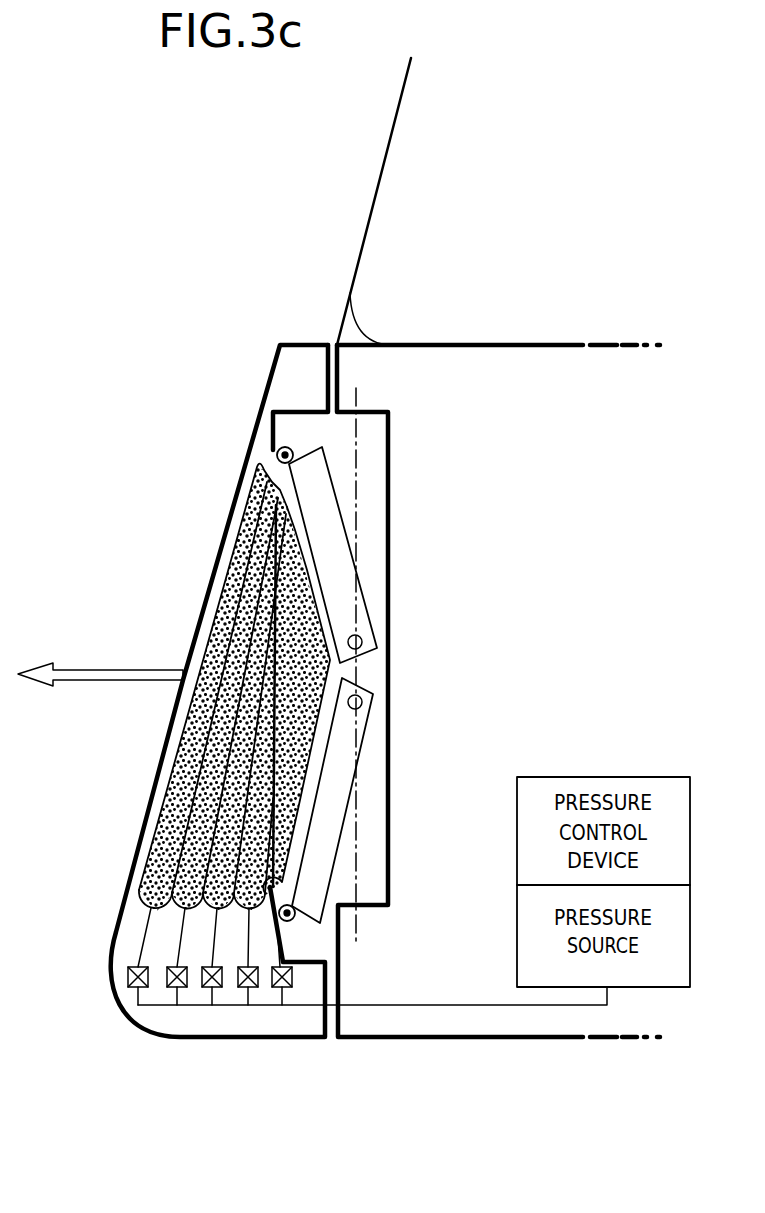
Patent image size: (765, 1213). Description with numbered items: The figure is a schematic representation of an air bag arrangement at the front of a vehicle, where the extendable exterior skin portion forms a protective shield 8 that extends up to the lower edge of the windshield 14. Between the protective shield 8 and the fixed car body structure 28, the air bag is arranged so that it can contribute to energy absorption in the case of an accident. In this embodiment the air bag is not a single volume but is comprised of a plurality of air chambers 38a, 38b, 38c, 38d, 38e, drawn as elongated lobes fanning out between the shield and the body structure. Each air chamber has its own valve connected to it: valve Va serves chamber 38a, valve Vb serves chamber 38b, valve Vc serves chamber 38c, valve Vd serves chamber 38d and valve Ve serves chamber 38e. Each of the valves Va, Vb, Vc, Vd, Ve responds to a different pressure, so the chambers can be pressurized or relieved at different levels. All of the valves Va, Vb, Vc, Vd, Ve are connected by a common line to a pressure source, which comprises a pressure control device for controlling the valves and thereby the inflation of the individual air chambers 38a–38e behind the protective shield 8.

The windshield 14 is at (379, 182).
The car body structure 28 is at (392, 655).
The protective shield 8 is at (114, 930).
The air chamber 38a is at (242, 548).
The air chamber 38b is at (243, 612).
The air chamber 38c is at (257, 652).
The air chamber 38d is at (277, 718).
The air chamber 38e is at (283, 690).
The valve Va is at (128, 977).
The valve Vb is at (168, 987).
The valve Vc is at (203, 987).
The valve Vd is at (258, 987).
The valve Ve is at (293, 979).